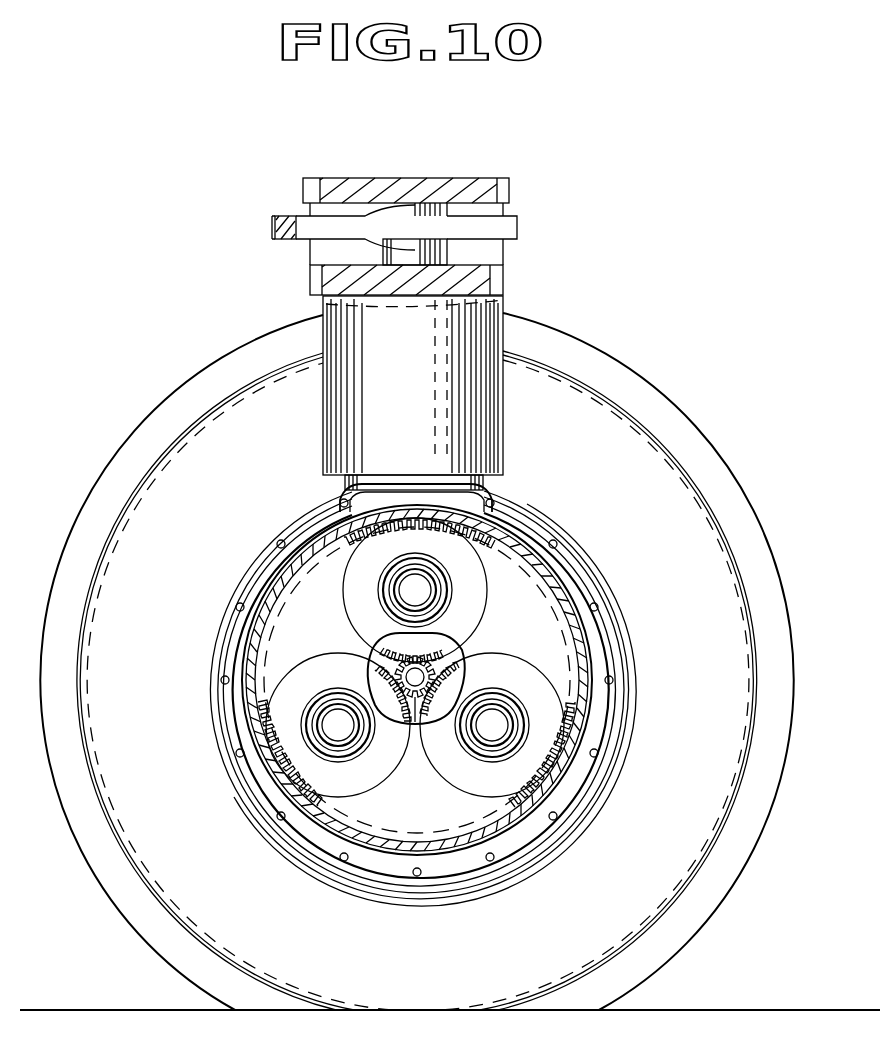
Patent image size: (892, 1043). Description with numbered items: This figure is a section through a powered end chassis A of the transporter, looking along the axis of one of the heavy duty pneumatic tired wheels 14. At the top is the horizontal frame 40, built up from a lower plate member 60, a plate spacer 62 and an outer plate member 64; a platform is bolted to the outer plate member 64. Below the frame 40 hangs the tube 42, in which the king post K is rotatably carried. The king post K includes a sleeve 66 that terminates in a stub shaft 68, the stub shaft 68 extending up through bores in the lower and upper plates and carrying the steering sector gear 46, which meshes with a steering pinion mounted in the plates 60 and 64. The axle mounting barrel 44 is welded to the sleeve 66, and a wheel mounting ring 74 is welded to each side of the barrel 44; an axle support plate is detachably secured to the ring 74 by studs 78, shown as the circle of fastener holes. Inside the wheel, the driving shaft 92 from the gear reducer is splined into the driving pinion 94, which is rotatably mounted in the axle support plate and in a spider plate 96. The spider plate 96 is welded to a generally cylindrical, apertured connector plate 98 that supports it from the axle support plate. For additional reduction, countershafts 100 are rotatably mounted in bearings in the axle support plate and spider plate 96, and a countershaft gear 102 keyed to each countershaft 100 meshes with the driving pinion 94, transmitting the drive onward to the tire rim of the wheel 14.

The heavy duty pneumatic tired wheel 14 is at (622, 362).
The horizontal frame 40 is at (392, 211).
The tube 42 is at (378, 351).
The axle mounting barrel 44 is at (497, 525).
The steering sector gear 46 is at (272, 228).
The lower plate member 60 is at (505, 277).
The plate spacer 62 is at (505, 251).
The outer plate member 64 is at (500, 189).
The sleeve 66 is at (487, 500).
The stub shaft 68 is at (383, 258).
The wheel mounting ring 74 is at (540, 535).
The studs 78 is at (277, 544).
The driving shaft 92 is at (415, 724).
The driving pinion 94 is at (455, 691).
The spider plate 96 is at (535, 595).
The connector plate 98 is at (565, 560).
The countershaft 100 is at (408, 598).
The countershaft gear 102 is at (428, 645).
The end chassis A is at (208, 328).
The king post K is at (342, 499).